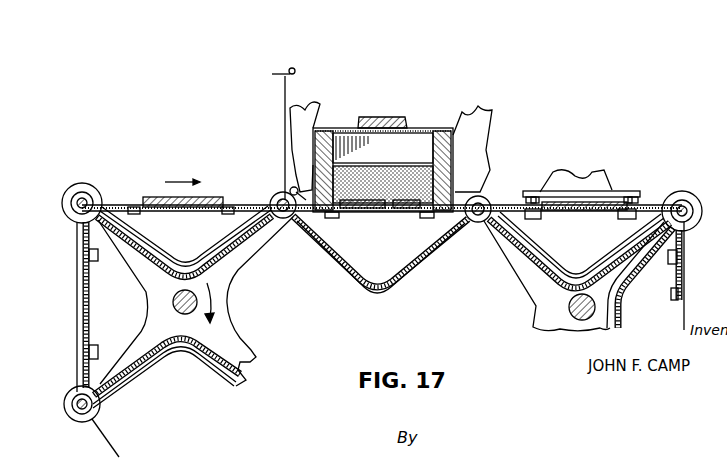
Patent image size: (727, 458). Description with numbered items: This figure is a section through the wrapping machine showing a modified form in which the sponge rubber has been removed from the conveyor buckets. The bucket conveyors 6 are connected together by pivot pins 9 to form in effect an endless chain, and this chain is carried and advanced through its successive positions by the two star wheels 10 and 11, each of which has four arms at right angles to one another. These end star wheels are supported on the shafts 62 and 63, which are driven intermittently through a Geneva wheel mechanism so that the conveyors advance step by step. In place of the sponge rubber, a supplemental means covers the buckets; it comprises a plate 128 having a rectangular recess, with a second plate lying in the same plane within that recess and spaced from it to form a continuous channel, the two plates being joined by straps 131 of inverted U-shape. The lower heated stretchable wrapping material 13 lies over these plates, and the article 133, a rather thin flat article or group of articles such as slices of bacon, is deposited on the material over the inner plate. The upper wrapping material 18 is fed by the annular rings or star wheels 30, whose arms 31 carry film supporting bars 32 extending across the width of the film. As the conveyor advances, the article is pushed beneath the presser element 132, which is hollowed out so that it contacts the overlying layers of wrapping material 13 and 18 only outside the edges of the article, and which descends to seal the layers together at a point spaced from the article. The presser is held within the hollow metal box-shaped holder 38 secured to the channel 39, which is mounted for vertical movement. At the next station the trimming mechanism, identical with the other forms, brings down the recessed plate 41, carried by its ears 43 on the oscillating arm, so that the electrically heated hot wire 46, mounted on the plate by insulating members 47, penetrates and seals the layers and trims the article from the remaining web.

The bucket conveyor 6 is at (246, 246).
The pivot pin 9 is at (78, 203).
The star wheel 10 is at (240, 346).
The star wheel 11 is at (510, 253).
The wrapping material 13 is at (112, 447).
The wrapping material 18 is at (273, 133).
The star wheel 30 is at (312, 116).
The arm 31 is at (300, 168).
The film supporting bar 32 is at (290, 186).
The box-shaped holder 38 is at (433, 128).
The channel 39 is at (368, 118).
The plate 41 is at (634, 196).
The ear 43 is at (588, 178).
The hot wire 46 is at (526, 200).
The insulating member 47 is at (632, 198).
The shaft 62 is at (574, 320).
The shaft 63 is at (183, 315).
The plate 128 is at (110, 204).
The strap 131 is at (213, 218).
The presser element 132 is at (470, 165).
The article 133 is at (210, 197).